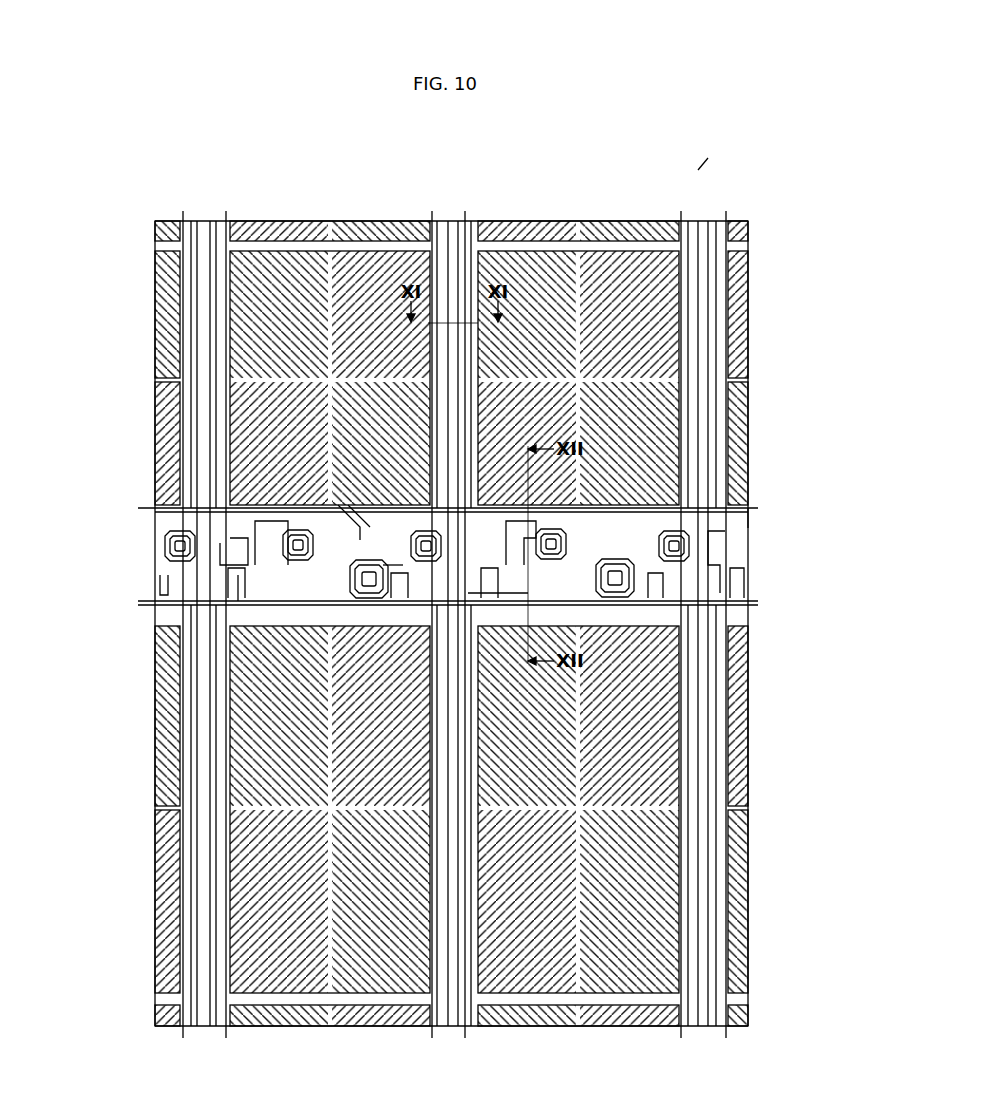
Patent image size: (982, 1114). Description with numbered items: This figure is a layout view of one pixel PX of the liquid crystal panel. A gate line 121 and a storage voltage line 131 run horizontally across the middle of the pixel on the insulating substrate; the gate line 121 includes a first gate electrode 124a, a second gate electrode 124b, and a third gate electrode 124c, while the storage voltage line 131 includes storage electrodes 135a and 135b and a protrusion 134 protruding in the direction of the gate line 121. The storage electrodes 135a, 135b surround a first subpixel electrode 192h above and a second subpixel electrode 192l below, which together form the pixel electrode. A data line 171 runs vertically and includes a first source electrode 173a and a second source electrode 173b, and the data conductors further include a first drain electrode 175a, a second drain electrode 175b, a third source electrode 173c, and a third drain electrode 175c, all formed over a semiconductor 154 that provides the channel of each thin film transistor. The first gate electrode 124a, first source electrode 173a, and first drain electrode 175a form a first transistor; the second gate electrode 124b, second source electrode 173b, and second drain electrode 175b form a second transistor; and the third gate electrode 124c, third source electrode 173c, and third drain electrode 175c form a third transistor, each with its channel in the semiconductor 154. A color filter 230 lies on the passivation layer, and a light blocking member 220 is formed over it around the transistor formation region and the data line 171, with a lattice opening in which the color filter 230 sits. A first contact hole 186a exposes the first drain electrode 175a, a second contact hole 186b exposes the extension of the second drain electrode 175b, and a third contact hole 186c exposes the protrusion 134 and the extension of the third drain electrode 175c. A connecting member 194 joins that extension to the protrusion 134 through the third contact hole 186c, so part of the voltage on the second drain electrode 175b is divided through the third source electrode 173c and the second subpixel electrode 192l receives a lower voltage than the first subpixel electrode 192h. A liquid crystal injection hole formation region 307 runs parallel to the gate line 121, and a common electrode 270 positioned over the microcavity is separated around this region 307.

The data line 171 is at (207, 233).
The first subpixel electrode 192h is at (272, 262).
The second subpixel electrode 192l is at (375, 986).
The storage electrode 135a is at (180, 314).
The storage electrode 135b is at (345, 243).
The light blocking member 220 is at (480, 250).
The color filter 230 is at (575, 250).
The common electrode 270 is at (729, 497).
The liquid crystal injection hole formation region 307 is at (750, 522).
The gate line 121 is at (200, 580).
The first gate electrode 124a is at (286, 522).
The second gate electrode 124b is at (156, 540).
The third gate electrode 124c is at (412, 555).
The storage voltage line 131 is at (322, 497).
The protrusion 134 is at (500, 514).
The semiconductor 154 is at (390, 496).
The first source electrode 173a is at (262, 600).
The second source electrode 173b is at (256, 518).
The third source electrode 173c is at (402, 596).
The first drain electrode 175a is at (262, 512).
The second drain electrode 175b is at (350, 514).
The third drain electrode 175c is at (395, 520).
The first contact hole 186a is at (344, 579).
The second contact hole 186b is at (255, 592).
The third contact hole 186c is at (582, 578).
The connecting member 194 is at (728, 540).
The pixel PX is at (690, 168).